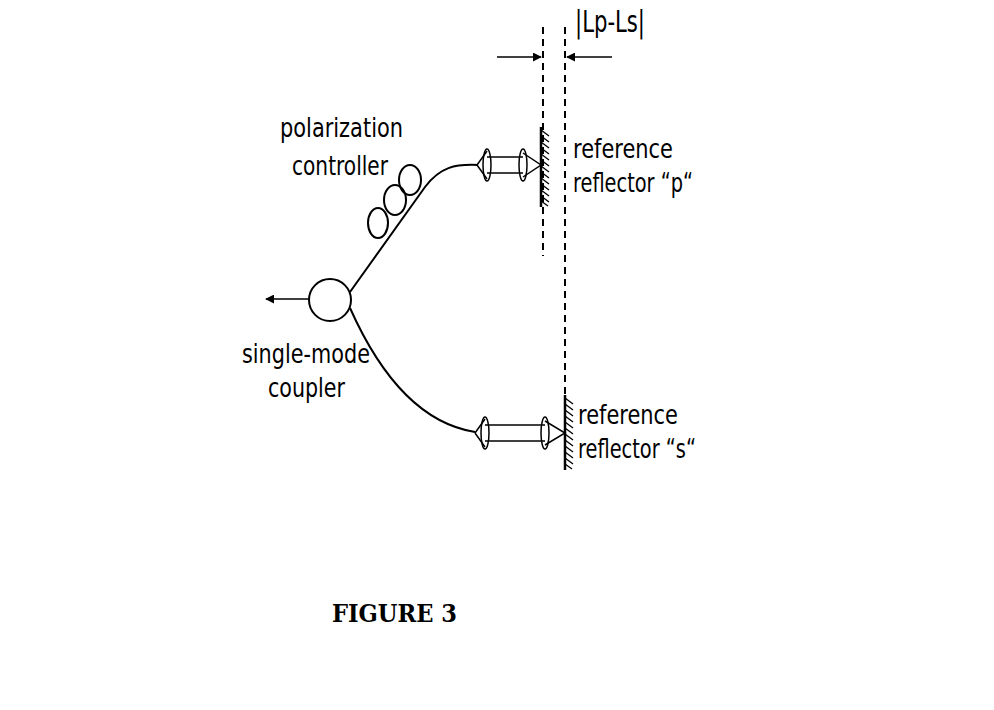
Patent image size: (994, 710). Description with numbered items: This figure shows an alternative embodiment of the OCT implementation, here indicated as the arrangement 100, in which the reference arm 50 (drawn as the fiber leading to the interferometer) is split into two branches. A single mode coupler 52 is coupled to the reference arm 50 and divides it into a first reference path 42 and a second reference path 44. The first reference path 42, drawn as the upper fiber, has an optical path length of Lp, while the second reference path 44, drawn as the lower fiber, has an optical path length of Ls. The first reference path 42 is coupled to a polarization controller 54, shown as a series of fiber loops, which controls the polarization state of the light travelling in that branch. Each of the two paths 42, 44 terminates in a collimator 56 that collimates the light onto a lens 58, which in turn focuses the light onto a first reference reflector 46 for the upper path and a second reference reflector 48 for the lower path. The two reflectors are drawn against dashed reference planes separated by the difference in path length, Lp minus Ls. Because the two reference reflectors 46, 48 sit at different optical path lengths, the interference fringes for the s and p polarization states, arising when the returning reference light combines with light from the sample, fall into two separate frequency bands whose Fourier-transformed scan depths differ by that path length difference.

The reference arm assembly 100 is at (119, 313).
The first reference path 42 is at (446, 164).
The second reference path 44 is at (403, 397).
The first reference reflector 46 is at (552, 186).
The second reference reflector 48 is at (576, 393).
The reference arm 50 is at (281, 294).
The single mode coupler 52 is at (315, 285).
The polarization controller 54 is at (383, 222).
The collimator 56 is at (486, 146).
The lens 58 is at (507, 192).